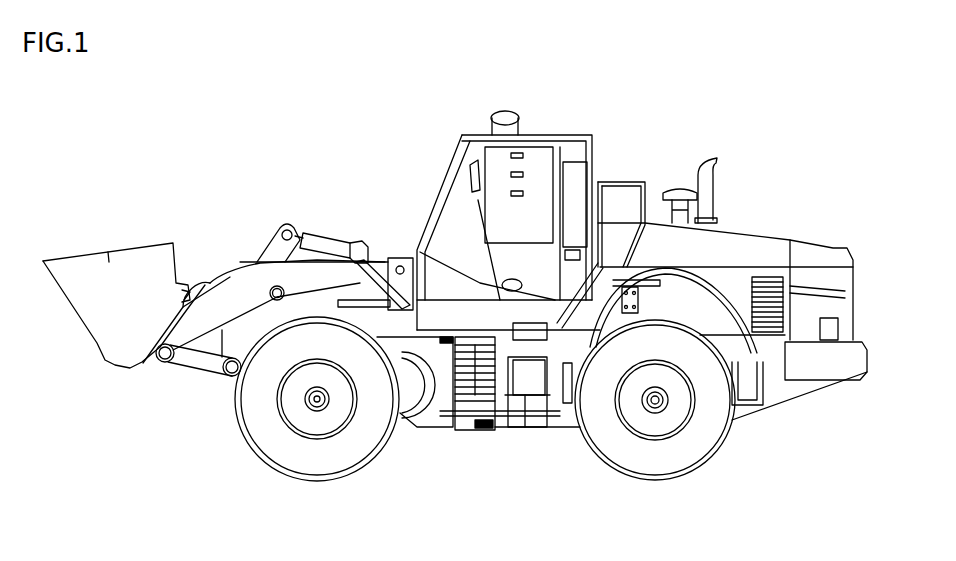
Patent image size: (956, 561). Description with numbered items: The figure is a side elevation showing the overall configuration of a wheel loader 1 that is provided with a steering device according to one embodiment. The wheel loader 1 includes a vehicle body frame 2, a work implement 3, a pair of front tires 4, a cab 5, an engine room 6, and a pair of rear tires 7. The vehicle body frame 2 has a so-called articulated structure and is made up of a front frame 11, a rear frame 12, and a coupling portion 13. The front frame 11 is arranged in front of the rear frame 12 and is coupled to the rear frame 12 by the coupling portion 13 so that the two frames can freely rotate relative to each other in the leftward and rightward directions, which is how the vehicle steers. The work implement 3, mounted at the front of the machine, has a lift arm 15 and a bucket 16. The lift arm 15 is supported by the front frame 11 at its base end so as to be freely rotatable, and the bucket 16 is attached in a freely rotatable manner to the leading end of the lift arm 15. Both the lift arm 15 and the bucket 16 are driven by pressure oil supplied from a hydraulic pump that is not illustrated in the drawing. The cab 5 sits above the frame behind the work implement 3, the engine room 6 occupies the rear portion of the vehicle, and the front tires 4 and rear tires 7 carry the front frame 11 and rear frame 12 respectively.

The wheel loader 1 is at (324, 126).
The vehicle body frame 2 is at (417, 490).
The work implement 3 is at (227, 180).
The front tires 4 is at (313, 481).
The cab 5 is at (560, 137).
The engine room 6 is at (757, 235).
The rear tires 7 is at (662, 480).
The front frame 11 is at (433, 427).
The rear frame 12 is at (533, 427).
The coupling portion 13 is at (487, 428).
The lift arm 15 is at (232, 270).
The bucket 16 is at (162, 253).